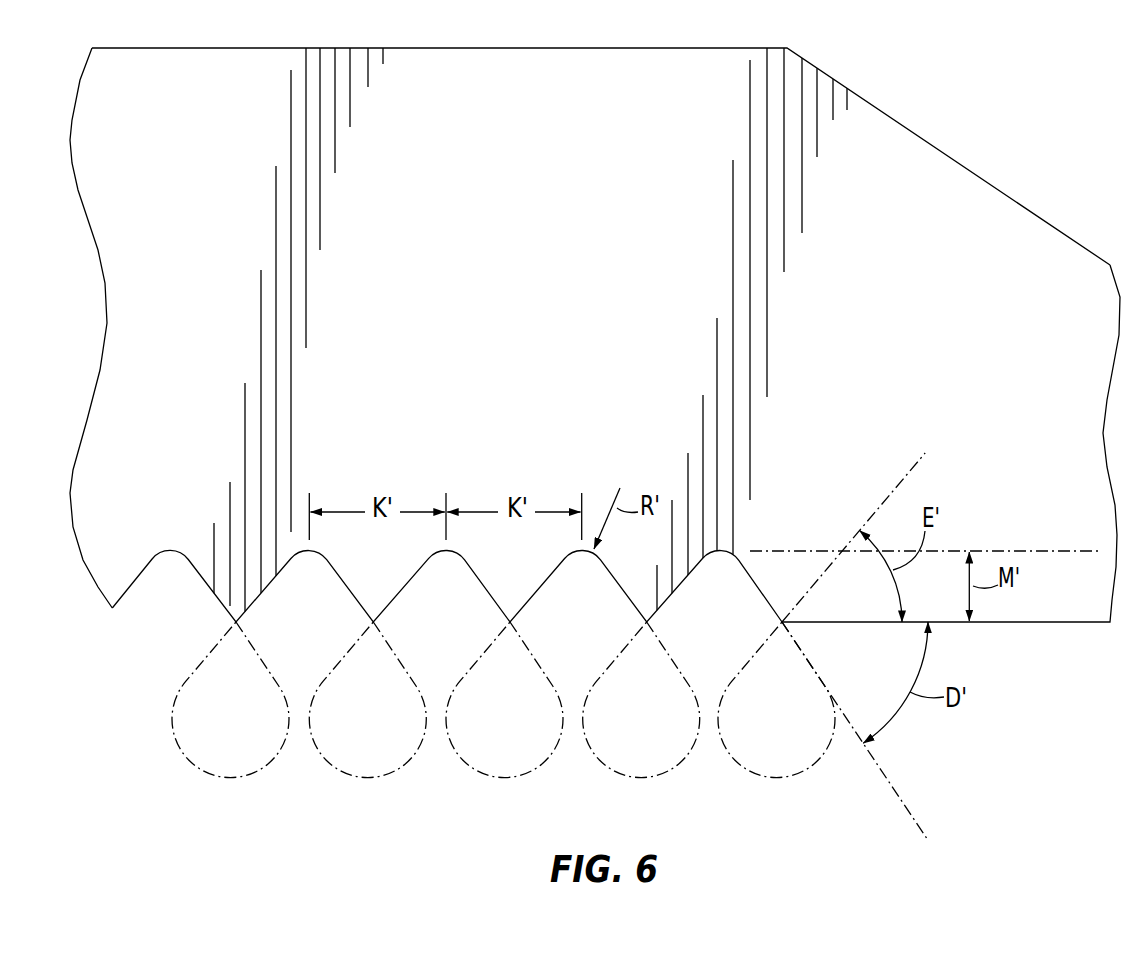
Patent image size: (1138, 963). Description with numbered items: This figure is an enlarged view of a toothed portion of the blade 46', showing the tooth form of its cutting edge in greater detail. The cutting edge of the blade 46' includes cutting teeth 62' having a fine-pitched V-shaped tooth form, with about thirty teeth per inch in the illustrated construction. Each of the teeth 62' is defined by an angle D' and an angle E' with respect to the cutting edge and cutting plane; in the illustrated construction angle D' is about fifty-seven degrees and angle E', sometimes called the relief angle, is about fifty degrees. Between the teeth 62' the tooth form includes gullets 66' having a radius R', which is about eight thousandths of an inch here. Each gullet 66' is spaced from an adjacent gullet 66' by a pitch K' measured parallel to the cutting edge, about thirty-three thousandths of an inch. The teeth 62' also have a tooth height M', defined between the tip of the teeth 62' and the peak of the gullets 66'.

The blade 46' is at (595, 335).
The cutting teeth 62' is at (503, 347).
The gullets 66' is at (447, 600).